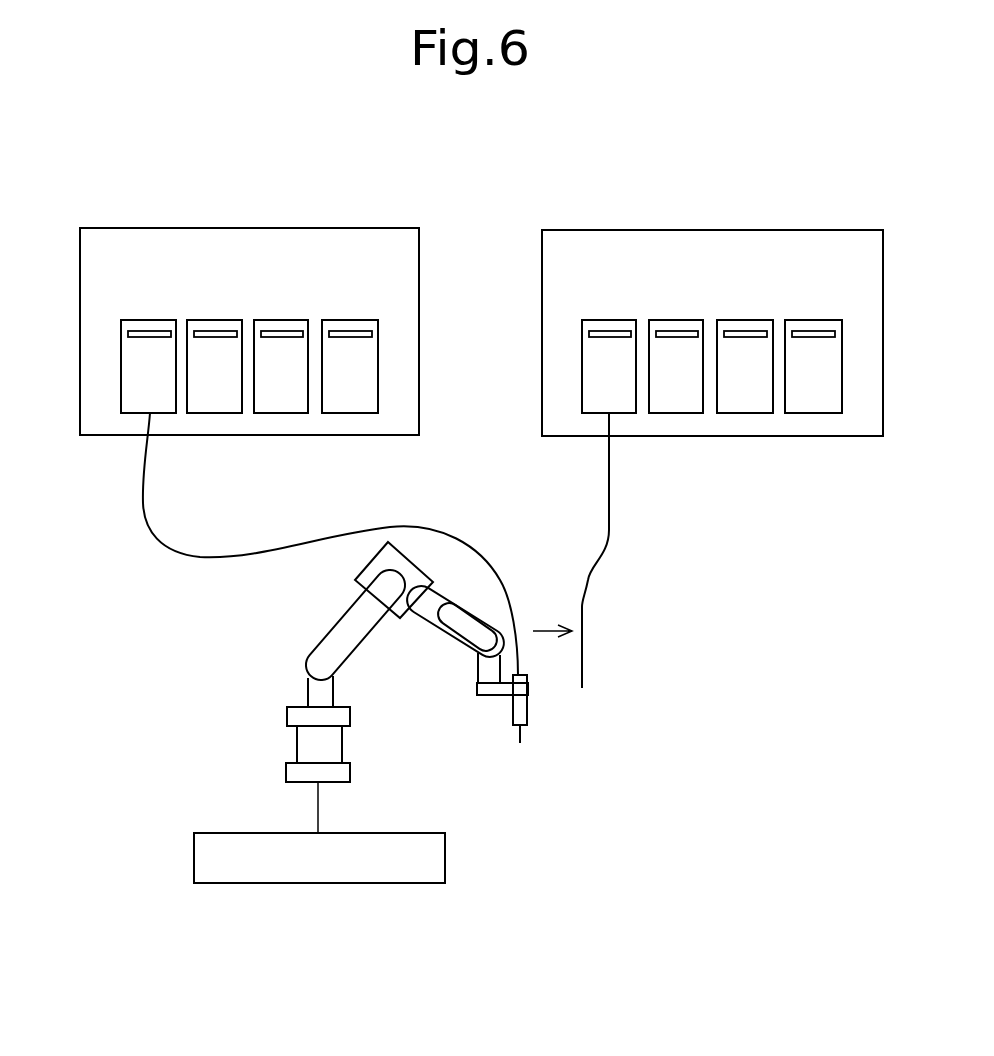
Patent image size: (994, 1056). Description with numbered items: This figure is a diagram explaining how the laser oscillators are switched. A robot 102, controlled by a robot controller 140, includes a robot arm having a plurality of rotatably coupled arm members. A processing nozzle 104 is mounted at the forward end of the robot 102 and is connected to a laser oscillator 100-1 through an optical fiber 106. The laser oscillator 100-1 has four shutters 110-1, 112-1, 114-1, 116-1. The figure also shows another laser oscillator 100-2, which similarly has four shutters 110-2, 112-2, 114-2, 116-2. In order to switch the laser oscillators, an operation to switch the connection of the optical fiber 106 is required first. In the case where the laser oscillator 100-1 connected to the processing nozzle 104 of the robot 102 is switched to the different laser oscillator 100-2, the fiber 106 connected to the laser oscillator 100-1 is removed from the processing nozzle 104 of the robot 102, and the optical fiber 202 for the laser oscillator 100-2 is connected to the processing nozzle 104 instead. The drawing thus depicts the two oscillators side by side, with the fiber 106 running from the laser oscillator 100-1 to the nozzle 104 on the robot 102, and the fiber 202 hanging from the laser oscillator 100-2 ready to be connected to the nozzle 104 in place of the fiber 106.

The laser oscillator 100-1 is at (255, 228).
The shutter 110-1 is at (142, 320).
The shutter 112-1 is at (213, 320).
The shutter 114-1 is at (283, 320).
The shutter 116-1 is at (355, 320).
The laser oscillator 100-2 is at (733, 230).
The shutter 110-2 is at (608, 320).
The shutter 112-2 is at (676, 320).
The shutter 114-2 is at (749, 320).
The shutter 116-2 is at (822, 320).
The optical fiber 106 is at (175, 555).
The optical fiber 202 is at (608, 543).
The robot 102 is at (297, 743).
The processing nozzle 104 is at (523, 708).
The robot controller 140 is at (405, 833).